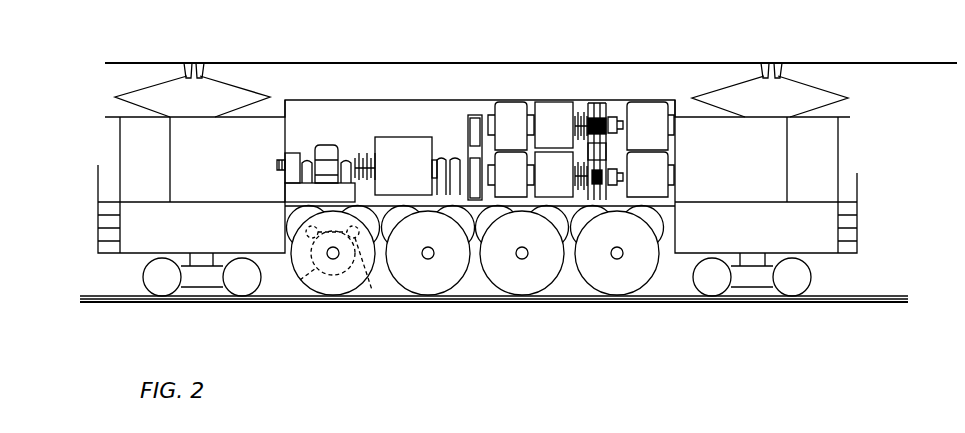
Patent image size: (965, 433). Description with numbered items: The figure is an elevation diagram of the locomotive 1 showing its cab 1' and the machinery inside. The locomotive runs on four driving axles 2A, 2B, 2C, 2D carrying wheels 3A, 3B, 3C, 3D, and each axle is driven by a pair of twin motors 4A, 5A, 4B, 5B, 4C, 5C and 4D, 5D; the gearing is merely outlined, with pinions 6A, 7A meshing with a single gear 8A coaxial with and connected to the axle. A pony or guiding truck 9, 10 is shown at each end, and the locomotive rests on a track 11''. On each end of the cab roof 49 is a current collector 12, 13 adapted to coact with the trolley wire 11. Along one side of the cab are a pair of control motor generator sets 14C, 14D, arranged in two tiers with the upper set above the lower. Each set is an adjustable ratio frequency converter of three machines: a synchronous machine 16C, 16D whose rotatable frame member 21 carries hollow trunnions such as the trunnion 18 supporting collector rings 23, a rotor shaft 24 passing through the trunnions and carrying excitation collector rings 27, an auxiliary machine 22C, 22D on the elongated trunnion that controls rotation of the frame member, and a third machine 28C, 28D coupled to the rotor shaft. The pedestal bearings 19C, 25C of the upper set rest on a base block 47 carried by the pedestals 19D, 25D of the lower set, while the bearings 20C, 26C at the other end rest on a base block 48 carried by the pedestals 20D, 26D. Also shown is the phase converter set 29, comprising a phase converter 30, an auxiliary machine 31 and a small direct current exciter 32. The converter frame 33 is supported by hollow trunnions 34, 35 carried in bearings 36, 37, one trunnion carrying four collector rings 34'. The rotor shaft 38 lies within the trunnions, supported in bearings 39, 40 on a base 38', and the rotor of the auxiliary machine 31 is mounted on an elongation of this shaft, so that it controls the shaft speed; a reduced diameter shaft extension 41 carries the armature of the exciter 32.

The locomotive body 1 is at (504, 165).
The locomotive cab 1' is at (104, 101).
The driving axle 2A is at (333, 259).
The driving axle 2B is at (428, 259).
The driving axle 2C is at (522, 259).
The driving axle 2D is at (617, 259).
The wheel 3A is at (357, 290).
The wheel 3B is at (462, 283).
The wheel 3C is at (548, 283).
The wheel 3D is at (640, 283).
The twin motor 4A is at (305, 223).
The twin motor 4B is at (393, 214).
The twin motor 4C is at (488, 214).
The twin motor 4D is at (583, 214).
The twin motor 5A is at (361, 223).
The twin motor 5B is at (462, 214).
The twin motor 5C is at (556, 214).
The twin motor 5D is at (651, 214).
The pinion 6A is at (306, 238).
The pinion 7A is at (371, 264).
The gear 8A is at (300, 280).
The pony or guiding truck 9 is at (202, 274).
The pony or guiding truck 10 is at (752, 274).
The trolley wire 11 is at (531, 50).
The track 11'' is at (493, 316).
The current collector 12 is at (205, 64).
The current collector 13 is at (781, 63).
The control motor generator set 14C is at (687, 131).
The control motor generator set 14D is at (687, 179).
The synchronous machine 16C is at (554, 125).
The synchronous machine 16D is at (554, 174).
The hollow trunnion 18 is at (588, 115).
The pedestal bearing 19C is at (480, 115).
The pedestal bearing 19D is at (490, 176).
The pedestal bearing 20C is at (597, 118).
The pedestal bearing 20D is at (580, 187).
The rotatable frame member 21 is at (543, 102).
The auxiliary machine 22C is at (511, 126).
The auxiliary machine 22D is at (511, 174).
The collector rings 23 is at (582, 118).
The rotor shaft 24 is at (475, 118).
The bearing 25C is at (470, 118).
The bearing 25D is at (474, 203).
The bearing 26C is at (612, 118).
The bearing 26D is at (612, 190).
The collector rings 27 is at (601, 122).
The third machine 28C is at (650, 126).
The third machine 28D is at (650, 174).
The phase converter set 29 is at (375, 118).
The phase converter 30 is at (403, 166).
The auxiliary machine 31 is at (326, 164).
The direct current exciter 32 is at (277, 166).
The frame 33 is at (390, 137).
The hollow trunnion 34 is at (365, 148).
The collector rings 34' is at (378, 185).
The hollow trunnion 35 is at (440, 156).
The bearing 36 is at (348, 160).
The bearing 37 is at (445, 178).
The rotor shaft 38 is at (370, 157).
The base 38' is at (329, 193).
The bearing 39 is at (307, 160).
The bearing 40 is at (434, 168).
The shaft extension 41 is at (295, 155).
The base block 47 is at (475, 157).
The base block 48 is at (597, 151).
The roof 49 is at (675, 82).